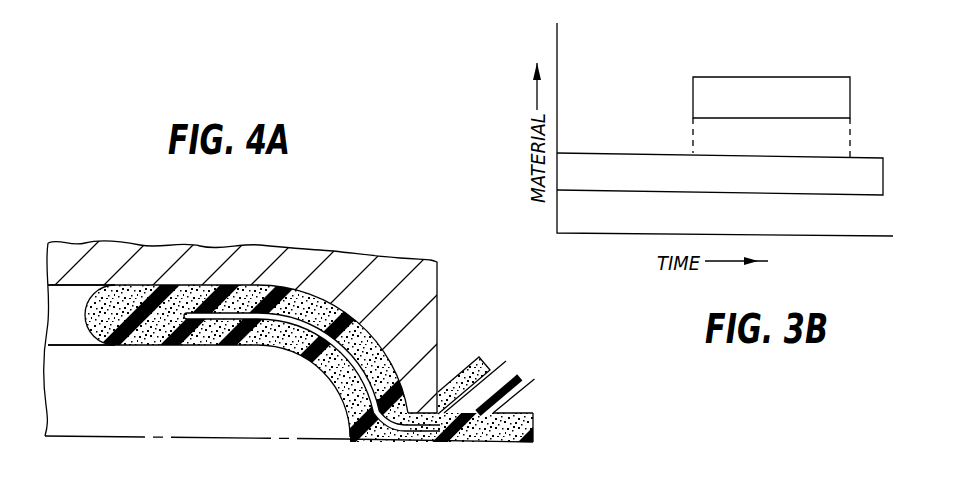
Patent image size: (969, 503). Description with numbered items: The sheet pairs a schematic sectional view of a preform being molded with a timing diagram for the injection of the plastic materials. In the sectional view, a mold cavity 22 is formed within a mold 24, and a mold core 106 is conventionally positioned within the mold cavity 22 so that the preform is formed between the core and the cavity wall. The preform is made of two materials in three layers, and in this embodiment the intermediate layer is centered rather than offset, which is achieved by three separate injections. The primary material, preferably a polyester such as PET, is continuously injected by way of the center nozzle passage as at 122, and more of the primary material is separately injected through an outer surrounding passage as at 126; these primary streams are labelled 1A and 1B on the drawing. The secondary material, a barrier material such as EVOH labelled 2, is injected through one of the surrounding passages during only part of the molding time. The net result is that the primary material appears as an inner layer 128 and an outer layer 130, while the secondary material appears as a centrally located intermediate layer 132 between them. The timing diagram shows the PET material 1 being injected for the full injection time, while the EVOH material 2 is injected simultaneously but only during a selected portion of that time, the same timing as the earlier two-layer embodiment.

In FIG. 4A, the mold cavity 22 is at (78, 291).
In FIG. 4A, the mold 24 is at (402, 276).
In FIG. 4A, the mold core 106 is at (231, 420).
In FIG. 4A, the outer layer 130 is at (298, 302).
In FIG. 4A, the inner layer 128 is at (295, 341).
In FIG. 4A, the intermediate layer 132 is at (197, 321).
In FIG. 4A, the primary material injection through outer surrounding passage 126 is at (455, 390).
In FIG. 4A, the primary material injection through center passage 122 is at (531, 412).
In FIG. 4A, the first PET flow stream 1A is at (537, 445).
In FIG. 4A, the second PET flow stream 1B is at (480, 375).
In FIG. 4A, the EVOH barrier flow stream 2 is at (520, 377).
In FIG. 3B, the EVOH barrier flow stream 2 is at (771, 117).
In FIG. 3B, the PET material injection interval 1 is at (720, 174).